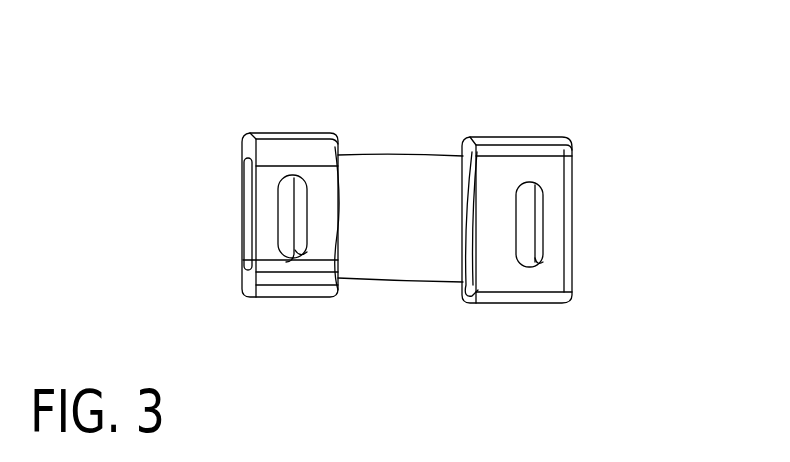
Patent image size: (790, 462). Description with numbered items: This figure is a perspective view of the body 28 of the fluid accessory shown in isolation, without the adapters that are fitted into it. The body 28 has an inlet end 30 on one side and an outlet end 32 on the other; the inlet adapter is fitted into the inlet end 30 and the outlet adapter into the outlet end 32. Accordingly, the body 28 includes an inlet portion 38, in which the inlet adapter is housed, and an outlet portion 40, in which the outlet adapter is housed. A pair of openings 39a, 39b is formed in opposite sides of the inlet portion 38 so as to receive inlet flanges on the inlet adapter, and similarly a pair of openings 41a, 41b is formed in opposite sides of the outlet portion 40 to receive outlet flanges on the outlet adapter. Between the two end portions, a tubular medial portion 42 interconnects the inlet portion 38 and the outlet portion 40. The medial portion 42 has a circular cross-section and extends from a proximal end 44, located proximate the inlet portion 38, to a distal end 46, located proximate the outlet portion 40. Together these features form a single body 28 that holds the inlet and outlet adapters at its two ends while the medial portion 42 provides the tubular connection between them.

The body 28 is at (439, 110).
The inlet end 30 is at (240, 180).
The outlet end 32 is at (571, 187).
The inlet portion 38 is at (278, 133).
The opening 39a is at (300, 245).
The opening 39b is at (293, 218).
The outlet portion 40 is at (515, 145).
The opening 41a is at (543, 255).
The opening 41b is at (535, 226).
The tubular medial portion 42 is at (381, 153).
The proximal end 44 is at (340, 280).
The distal end 46 is at (462, 284).